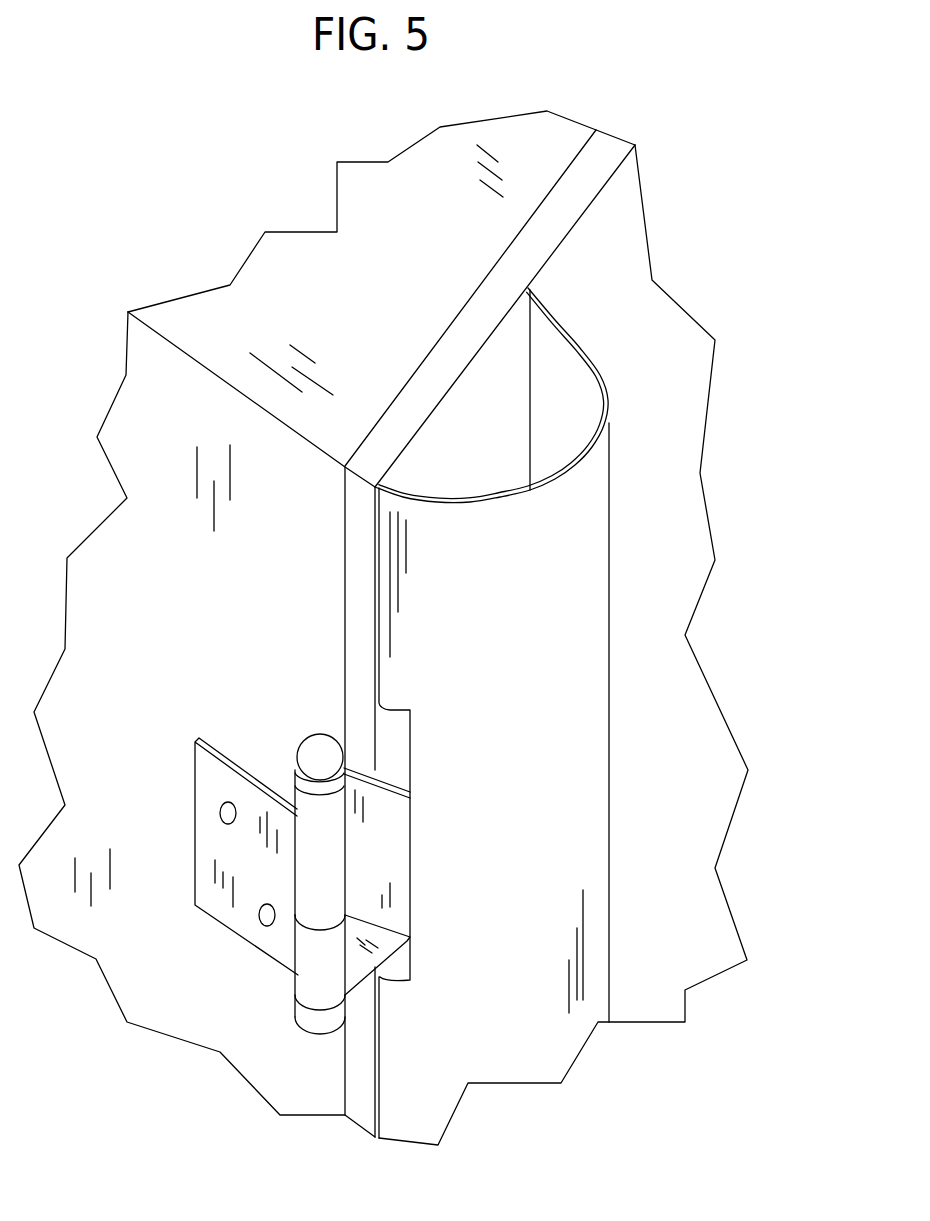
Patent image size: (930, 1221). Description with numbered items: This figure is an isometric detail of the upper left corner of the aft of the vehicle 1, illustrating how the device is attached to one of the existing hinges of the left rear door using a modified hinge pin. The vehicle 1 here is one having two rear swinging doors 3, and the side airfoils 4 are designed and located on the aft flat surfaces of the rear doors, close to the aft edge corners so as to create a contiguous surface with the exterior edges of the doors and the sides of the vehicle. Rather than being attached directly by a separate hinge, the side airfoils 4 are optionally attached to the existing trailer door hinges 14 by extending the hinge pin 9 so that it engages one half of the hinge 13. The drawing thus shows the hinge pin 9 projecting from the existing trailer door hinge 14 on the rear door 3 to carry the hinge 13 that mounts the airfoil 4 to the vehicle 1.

The vehicle 1 is at (362, 310).
The rear swinging doors 3 is at (635, 333).
The side airfoils 4 is at (547, 620).
The hinge pin 9 is at (312, 750).
The hinge 13 is at (318, 855).
The existing trailer door hinges 14 is at (322, 985).